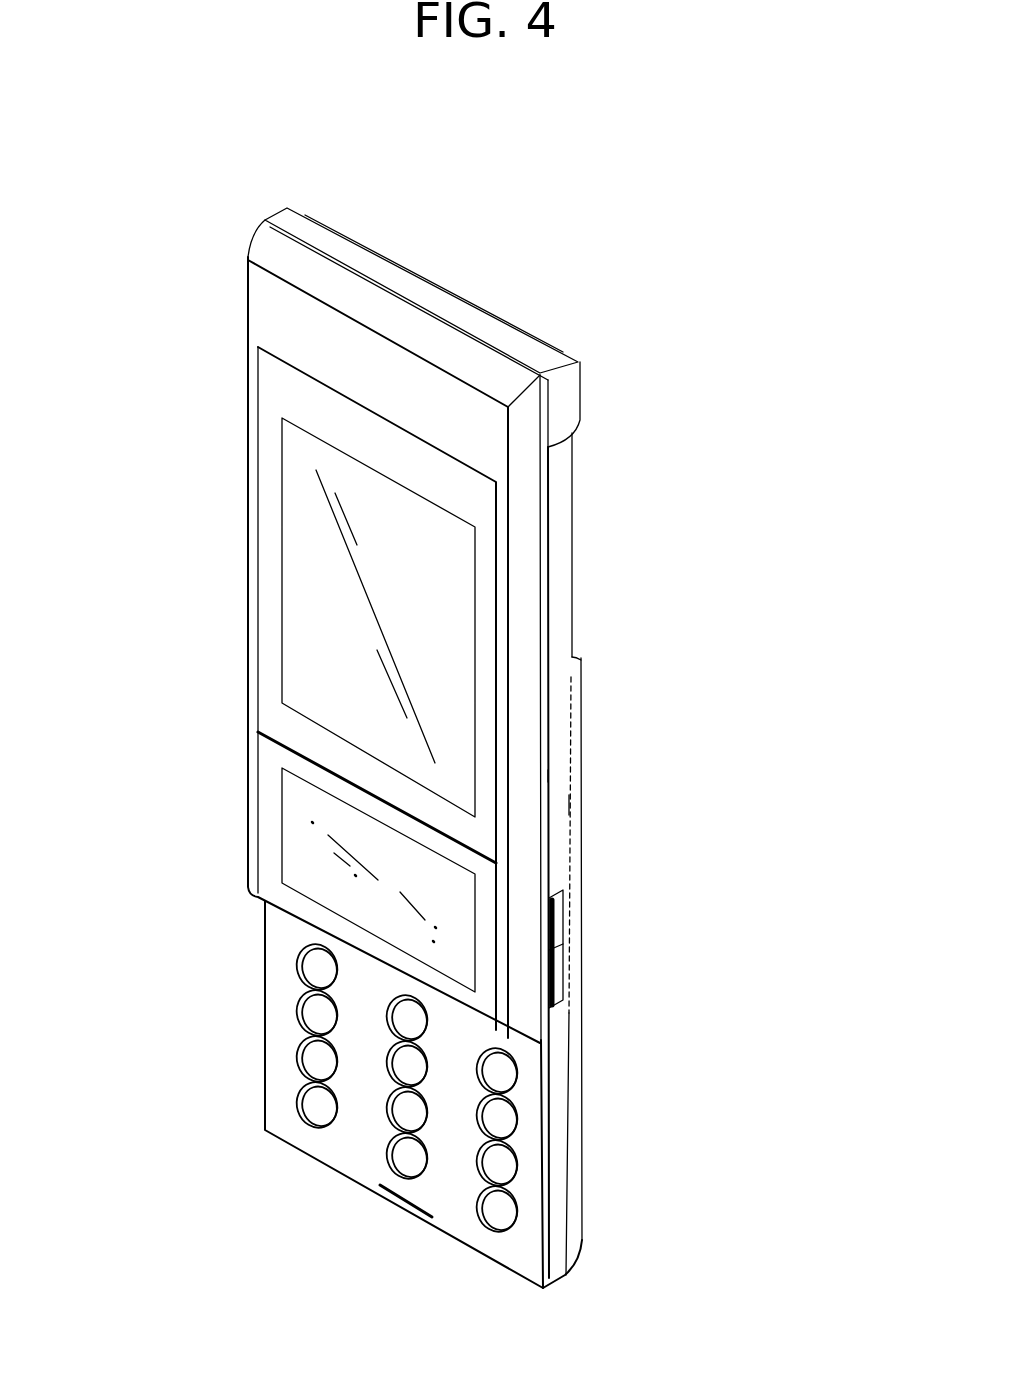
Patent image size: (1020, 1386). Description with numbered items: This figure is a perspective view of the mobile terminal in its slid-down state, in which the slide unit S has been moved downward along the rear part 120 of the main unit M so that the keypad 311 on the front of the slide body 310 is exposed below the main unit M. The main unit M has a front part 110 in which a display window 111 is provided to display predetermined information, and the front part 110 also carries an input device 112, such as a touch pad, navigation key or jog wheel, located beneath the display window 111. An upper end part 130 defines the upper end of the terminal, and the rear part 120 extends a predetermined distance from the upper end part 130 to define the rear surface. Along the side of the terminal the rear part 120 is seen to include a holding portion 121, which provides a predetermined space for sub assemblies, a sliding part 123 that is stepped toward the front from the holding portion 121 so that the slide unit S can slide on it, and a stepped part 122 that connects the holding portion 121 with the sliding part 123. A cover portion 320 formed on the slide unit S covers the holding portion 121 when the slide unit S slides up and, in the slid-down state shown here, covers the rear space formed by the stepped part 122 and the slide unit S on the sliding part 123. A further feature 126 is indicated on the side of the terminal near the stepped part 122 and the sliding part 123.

The main unit M is at (262, 207).
The front part 110 is at (247, 484).
The display window 111 is at (293, 540).
The input device 112 is at (295, 826).
The rear part 120 is at (683, 533).
The holding portion 121 is at (572, 530).
The stepped part 122 is at (581, 678).
The sliding part 123 is at (548, 775).
The protrusion 126 is at (555, 812).
The upper end part 130 is at (563, 354).
The slide body 310 is at (575, 982).
The keypad 311 is at (313, 1102).
The cover portion 320 is at (581, 826).
The slide unit S is at (627, 1113).